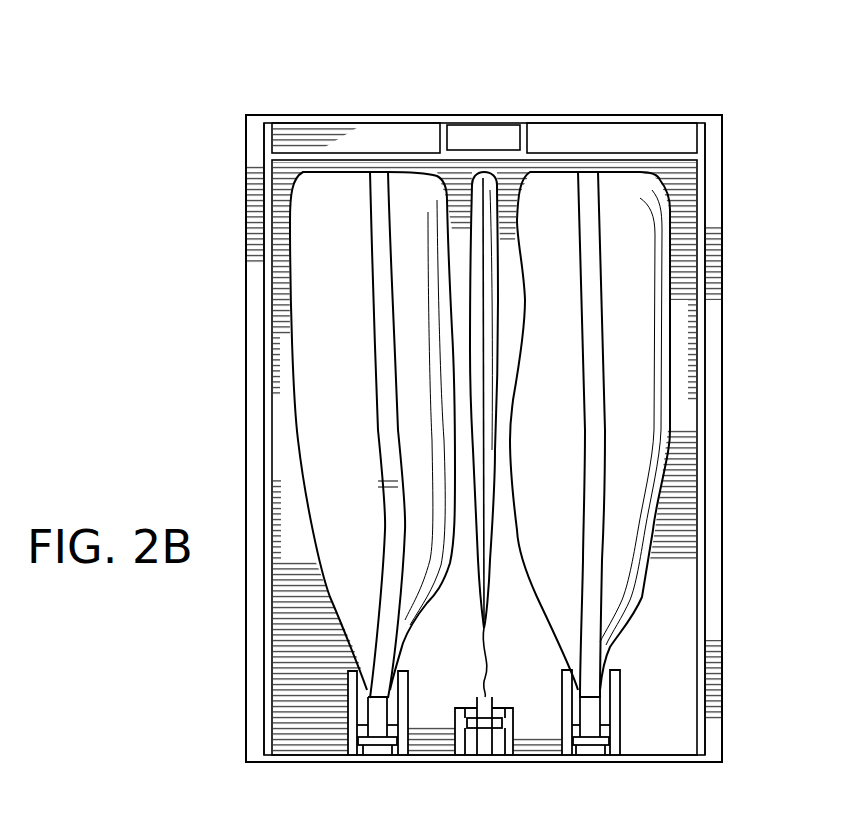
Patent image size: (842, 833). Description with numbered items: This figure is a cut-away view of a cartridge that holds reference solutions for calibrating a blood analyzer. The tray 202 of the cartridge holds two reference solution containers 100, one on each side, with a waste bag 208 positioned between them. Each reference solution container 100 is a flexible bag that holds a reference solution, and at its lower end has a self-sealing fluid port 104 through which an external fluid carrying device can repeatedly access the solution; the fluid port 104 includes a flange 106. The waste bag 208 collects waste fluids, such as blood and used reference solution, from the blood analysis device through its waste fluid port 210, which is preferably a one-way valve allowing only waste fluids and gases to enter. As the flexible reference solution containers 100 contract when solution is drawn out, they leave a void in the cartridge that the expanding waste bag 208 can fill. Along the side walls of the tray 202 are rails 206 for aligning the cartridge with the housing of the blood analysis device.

The tray 202 is at (238, 96).
The rail 206 is at (255, 258).
The reference solution container 100 is at (308, 420).
The waste bag 208 is at (488, 176).
The self-sealing fluid port 104 is at (336, 686).
The flange 106 is at (362, 742).
The waste fluid port 210 is at (452, 742).